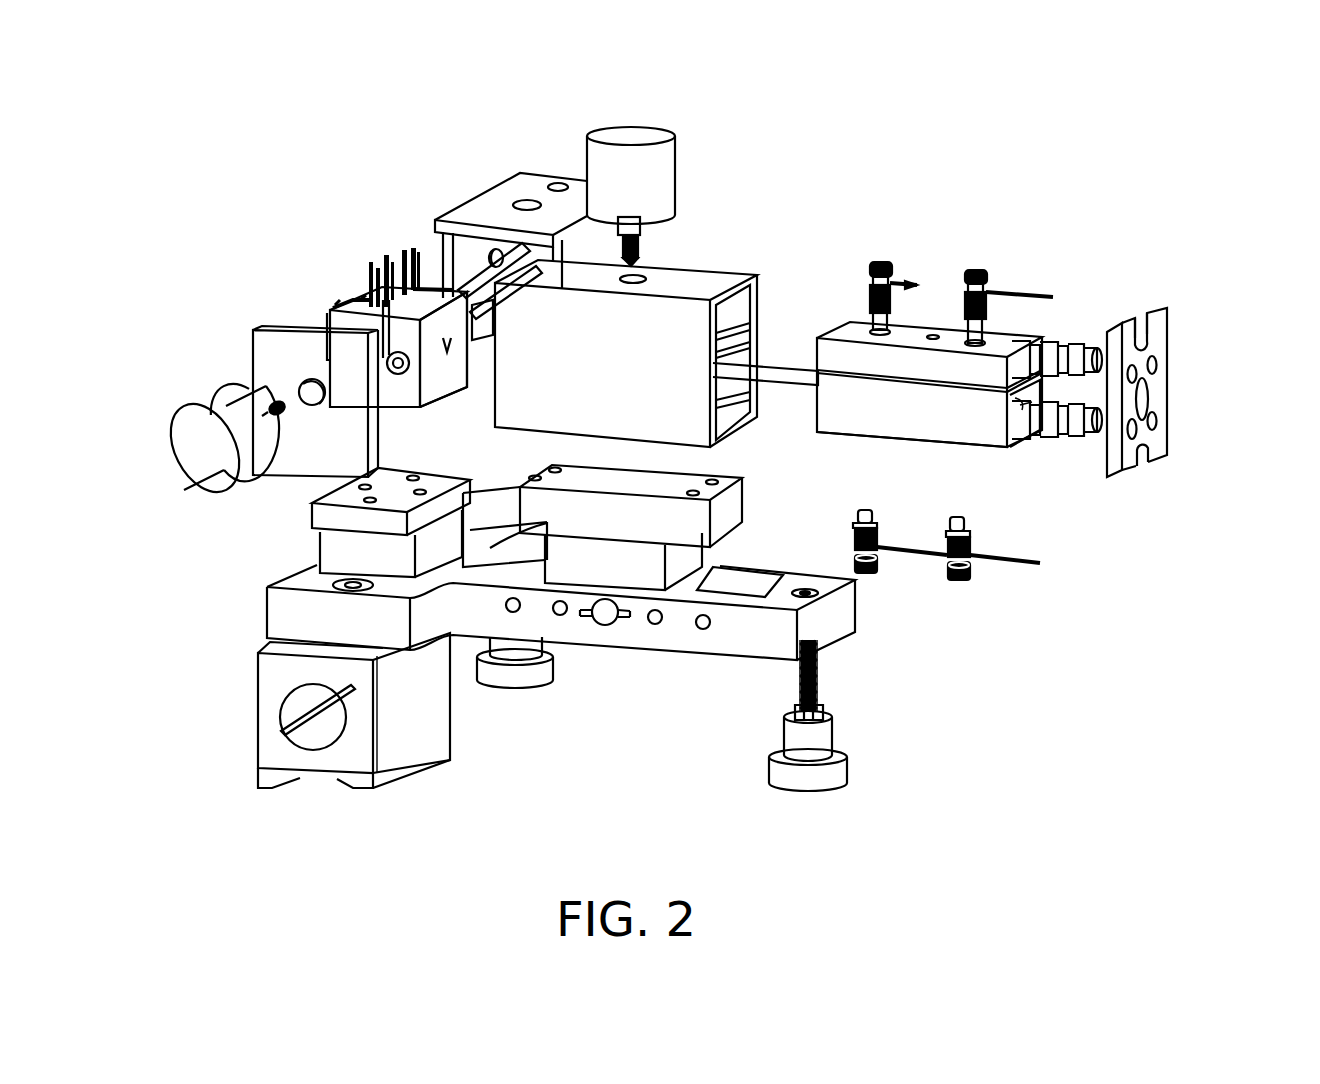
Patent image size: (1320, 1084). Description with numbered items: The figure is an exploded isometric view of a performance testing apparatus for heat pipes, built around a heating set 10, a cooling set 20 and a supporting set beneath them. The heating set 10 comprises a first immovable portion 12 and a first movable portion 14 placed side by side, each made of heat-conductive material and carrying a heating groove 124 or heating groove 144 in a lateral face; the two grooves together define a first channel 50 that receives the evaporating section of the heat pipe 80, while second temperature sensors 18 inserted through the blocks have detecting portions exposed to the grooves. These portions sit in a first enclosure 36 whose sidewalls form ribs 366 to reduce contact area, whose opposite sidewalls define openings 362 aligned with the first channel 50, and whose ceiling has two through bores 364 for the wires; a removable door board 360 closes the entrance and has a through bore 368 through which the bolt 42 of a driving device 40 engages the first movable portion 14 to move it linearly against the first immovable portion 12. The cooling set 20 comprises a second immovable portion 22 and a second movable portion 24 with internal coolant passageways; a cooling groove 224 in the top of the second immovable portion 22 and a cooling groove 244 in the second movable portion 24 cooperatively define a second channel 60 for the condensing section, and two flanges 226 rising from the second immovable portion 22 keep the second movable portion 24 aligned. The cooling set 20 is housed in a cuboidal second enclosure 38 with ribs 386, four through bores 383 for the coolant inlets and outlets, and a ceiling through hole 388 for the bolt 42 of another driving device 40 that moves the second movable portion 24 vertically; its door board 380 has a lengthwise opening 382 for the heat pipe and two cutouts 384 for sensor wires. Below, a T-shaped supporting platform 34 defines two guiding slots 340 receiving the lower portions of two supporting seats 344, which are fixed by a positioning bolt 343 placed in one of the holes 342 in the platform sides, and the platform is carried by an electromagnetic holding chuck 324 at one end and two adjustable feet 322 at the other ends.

The heating set 10 is at (353, 285).
The first immovable portion 12 is at (458, 381).
The first movable portion 14 is at (432, 393).
The second temperature sensors 18 is at (880, 263).
The cooling set 20 is at (938, 318).
The second immovable portion 22 is at (863, 425).
The second movable portion 24 is at (910, 335).
The supporting platform 34 is at (263, 620).
The first enclosure 36 is at (571, 178).
The second enclosure 38 is at (707, 288).
The driving device 40 is at (197, 455).
The bolt 42 is at (277, 408).
The first channel 50 is at (408, 283).
The second channel 60 is at (1083, 503).
The heat pipe 80 is at (790, 380).
The heating groove 124 is at (403, 287).
The heating groove 144 is at (353, 300).
The cooling groove 224 is at (1015, 435).
The flanges 226 is at (1012, 393).
The cooling groove 244 is at (1057, 443).
The adjustable feet 322 is at (825, 738).
The electromagnetic holding chuck 324 is at (402, 743).
The guiding slots 340 is at (750, 590).
The holes 342 is at (703, 620).
The positioning bolt 343 is at (607, 625).
The supporting seats 344 is at (347, 550).
The door board 360 is at (287, 338).
The openings 362 is at (447, 350).
The through bores 364 is at (528, 203).
The ribs 366 is at (488, 258).
The through bore 368 is at (307, 385).
The door board 380 is at (1158, 325).
The lengthwise openings 382 is at (1140, 400).
The through bores 383 is at (1150, 422).
The cutouts 384 is at (1143, 333).
The ribs 386 is at (750, 330).
The through hole 388 is at (640, 282).